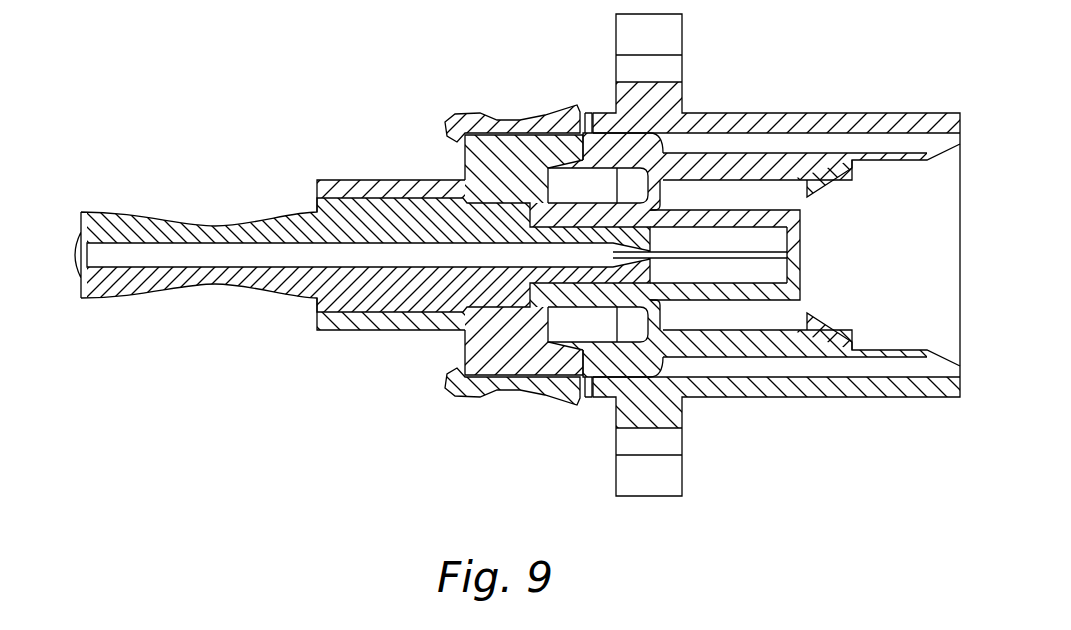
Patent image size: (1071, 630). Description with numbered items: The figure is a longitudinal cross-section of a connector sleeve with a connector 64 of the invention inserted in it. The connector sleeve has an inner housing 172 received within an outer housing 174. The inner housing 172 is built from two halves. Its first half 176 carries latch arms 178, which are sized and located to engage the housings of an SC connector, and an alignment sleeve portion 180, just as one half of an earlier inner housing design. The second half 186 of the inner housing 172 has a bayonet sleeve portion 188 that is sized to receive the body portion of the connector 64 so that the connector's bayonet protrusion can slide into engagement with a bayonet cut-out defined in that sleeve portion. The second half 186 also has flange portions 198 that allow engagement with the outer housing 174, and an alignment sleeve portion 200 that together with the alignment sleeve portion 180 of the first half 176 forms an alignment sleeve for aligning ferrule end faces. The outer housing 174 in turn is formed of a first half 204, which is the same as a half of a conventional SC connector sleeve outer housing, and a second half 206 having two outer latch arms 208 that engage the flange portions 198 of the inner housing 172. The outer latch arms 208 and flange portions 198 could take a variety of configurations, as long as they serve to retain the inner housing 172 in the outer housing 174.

The connector 64 is at (237, 212).
The inner housing 172 is at (607, 148).
The outer housing 174 is at (720, 118).
The first half 176 is at (678, 345).
The latch arms 178 is at (820, 194).
The alignment sleeve portion 180 is at (797, 292).
The second half 186 is at (473, 347).
The bayonet sleeve portion 188 is at (337, 332).
The flange portions 198 is at (477, 149).
The alignment sleeve portion 200 is at (562, 293).
The first half 204 is at (832, 116).
The second half 206 is at (598, 397).
The outer latch arms 208 is at (458, 126).